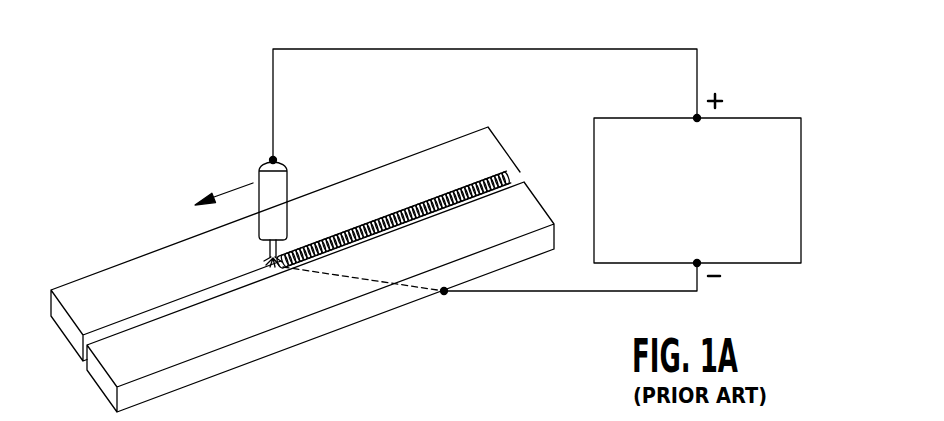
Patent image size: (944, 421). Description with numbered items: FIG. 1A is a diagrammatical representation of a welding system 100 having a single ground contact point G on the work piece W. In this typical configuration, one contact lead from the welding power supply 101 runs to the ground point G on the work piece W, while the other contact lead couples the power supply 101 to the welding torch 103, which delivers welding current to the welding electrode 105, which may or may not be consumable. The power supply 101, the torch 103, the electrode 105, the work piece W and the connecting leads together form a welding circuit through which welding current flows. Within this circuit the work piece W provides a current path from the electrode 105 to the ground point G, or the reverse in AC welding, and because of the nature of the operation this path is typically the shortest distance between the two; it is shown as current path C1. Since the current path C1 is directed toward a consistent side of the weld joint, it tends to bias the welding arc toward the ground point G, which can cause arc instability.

The welding system 100 is at (741, 35).
The welding power supply 101 is at (760, 118).
The welding torch 103 is at (287, 182).
The welding electrode 105 is at (270, 256).
The ground contact point G is at (444, 291).
The current path C1 is at (353, 278).
The work piece W is at (207, 378).